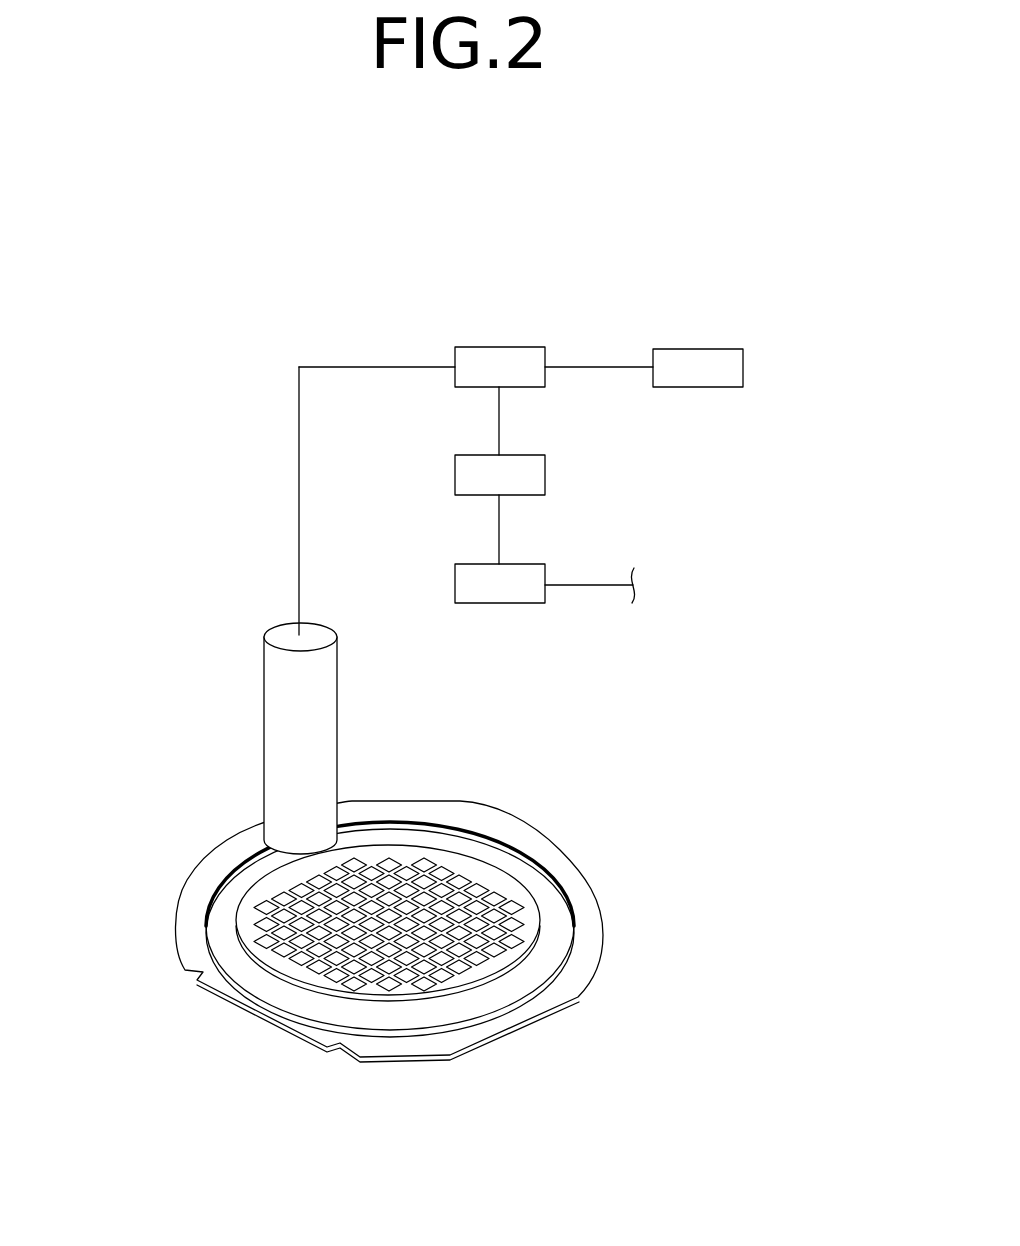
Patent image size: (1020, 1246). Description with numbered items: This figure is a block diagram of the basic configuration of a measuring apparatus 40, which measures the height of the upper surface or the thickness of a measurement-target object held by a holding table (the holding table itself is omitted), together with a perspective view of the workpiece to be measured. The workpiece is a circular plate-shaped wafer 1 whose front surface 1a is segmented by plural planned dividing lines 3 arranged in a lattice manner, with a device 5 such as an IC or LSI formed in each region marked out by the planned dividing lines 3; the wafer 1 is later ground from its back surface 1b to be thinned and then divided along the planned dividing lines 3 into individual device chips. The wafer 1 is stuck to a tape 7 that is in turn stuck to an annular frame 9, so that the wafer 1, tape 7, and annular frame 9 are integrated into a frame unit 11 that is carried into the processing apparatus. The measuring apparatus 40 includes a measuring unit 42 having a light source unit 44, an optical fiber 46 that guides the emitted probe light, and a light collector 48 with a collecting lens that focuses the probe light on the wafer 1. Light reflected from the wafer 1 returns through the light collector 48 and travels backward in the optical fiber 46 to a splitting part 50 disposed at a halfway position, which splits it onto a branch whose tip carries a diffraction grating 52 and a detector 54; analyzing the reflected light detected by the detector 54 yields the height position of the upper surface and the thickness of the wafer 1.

The measuring apparatus 40 is at (196, 260).
The measuring unit 42 is at (388, 352).
The light source unit 44 is at (700, 349).
The optical fiber 46 is at (590, 366).
The light collector 48 is at (263, 741).
The splitting part 50 is at (495, 347).
The diffraction grating 52 is at (547, 478).
The detector 54 is at (502, 606).
The frame unit 11 is at (183, 871).
The annular frame 9 is at (478, 1028).
The tape 7 is at (522, 980).
The wafer 1 is at (519, 875).
The front surface 1a is at (527, 933).
The back surface 1b is at (403, 1005).
The planned dividing lines 3 is at (497, 900).
The device 5 is at (437, 870).